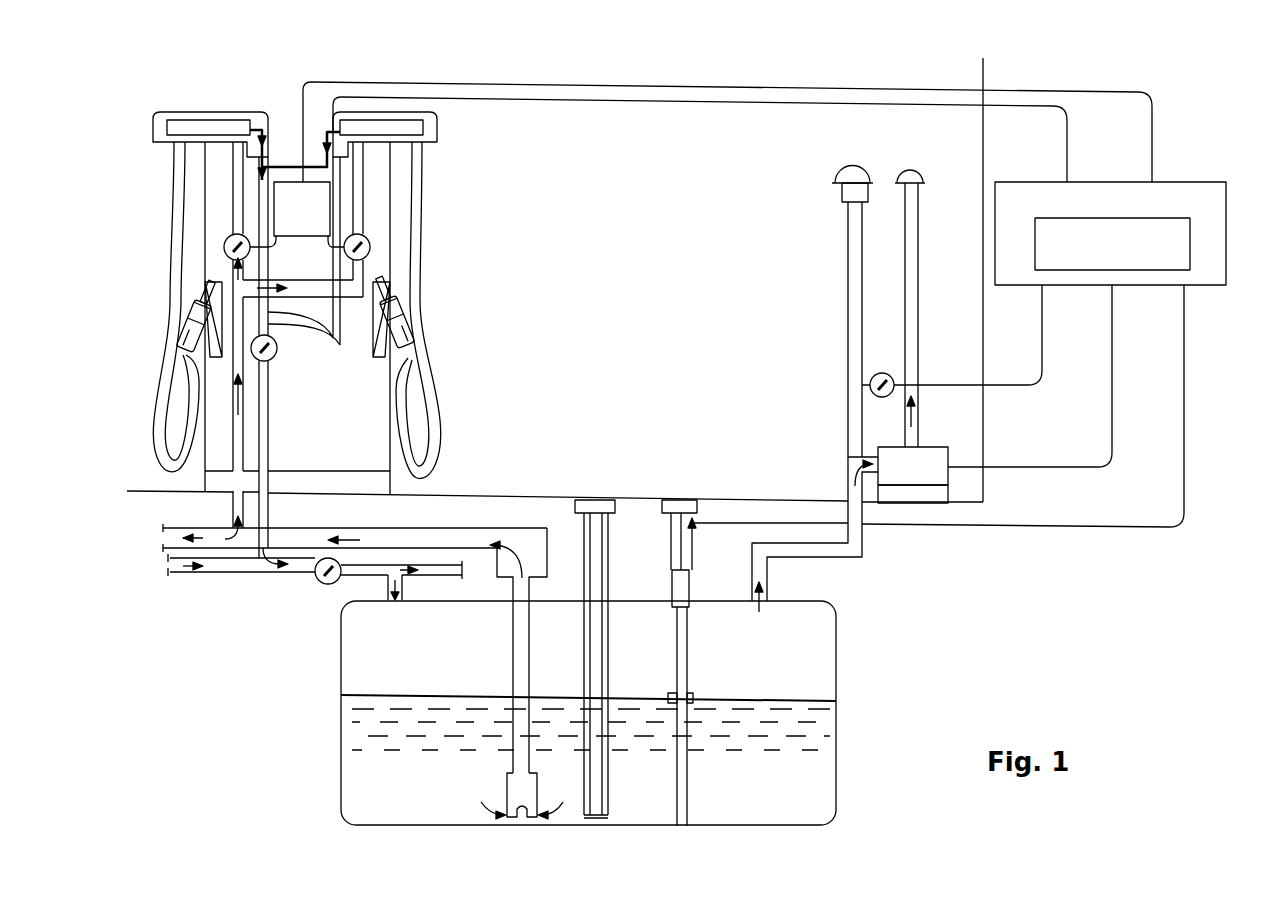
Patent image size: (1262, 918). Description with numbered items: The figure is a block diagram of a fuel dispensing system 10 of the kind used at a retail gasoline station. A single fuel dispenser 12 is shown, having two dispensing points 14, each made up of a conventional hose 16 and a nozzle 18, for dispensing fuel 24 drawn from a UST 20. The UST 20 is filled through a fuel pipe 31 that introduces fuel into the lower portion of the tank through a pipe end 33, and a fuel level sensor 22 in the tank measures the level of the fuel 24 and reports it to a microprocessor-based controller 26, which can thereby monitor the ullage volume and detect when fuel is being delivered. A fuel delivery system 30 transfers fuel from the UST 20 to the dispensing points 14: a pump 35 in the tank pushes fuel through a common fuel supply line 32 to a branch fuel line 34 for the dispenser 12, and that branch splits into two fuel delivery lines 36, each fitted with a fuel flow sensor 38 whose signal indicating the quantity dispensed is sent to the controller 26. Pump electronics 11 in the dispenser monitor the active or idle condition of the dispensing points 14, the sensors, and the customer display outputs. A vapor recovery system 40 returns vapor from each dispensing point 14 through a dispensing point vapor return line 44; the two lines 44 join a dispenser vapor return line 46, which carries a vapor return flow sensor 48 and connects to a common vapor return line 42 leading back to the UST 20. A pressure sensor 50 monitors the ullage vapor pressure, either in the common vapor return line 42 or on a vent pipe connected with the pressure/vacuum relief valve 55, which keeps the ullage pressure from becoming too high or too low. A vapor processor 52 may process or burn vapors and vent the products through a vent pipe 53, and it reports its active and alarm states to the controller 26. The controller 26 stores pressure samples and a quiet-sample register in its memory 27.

The fuel dispensing system 10 is at (186, 620).
The pump electronics 11 is at (290, 224).
The fuel dispenser 12 is at (257, 110).
The dispensing point 14 is at (218, 282).
The hose 16 is at (165, 380).
The nozzle 18 is at (185, 318).
The UST 20 is at (838, 668).
The fuel level sensor 22 is at (692, 690).
The fuel 24 is at (750, 783).
The controller 26 is at (1110, 213).
The memory 27 is at (1172, 257).
The fuel delivery system 30 is at (517, 526).
The fuel pipe 31 is at (596, 500).
The fuel supply line 32 is at (422, 530).
The pipe end 33 is at (602, 820).
The branch fuel line 34 is at (232, 527).
The pump 35 is at (517, 822).
The fuel delivery line 36 is at (232, 405).
The fuel flow sensor 38 is at (224, 250).
The vapor recovery system 40 is at (270, 589).
The common vapor return line 42 is at (370, 566).
The dispensing point vapor return line 44 is at (263, 130).
The dispenser vapor return line 46 is at (279, 352).
The vapor return flow sensor 48 is at (272, 372).
The pressure sensor 50 is at (322, 586).
The vapor processor 52 is at (938, 446).
The vent pipe 53 is at (923, 180).
The pressure/vacuum relief valve 55 is at (840, 182).